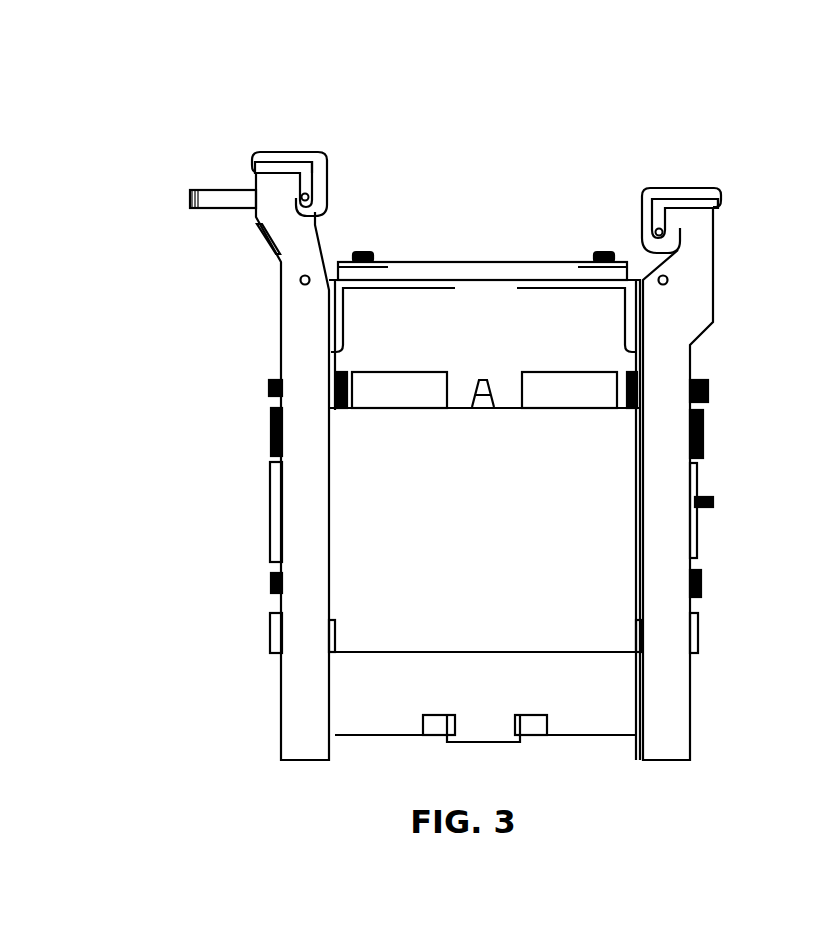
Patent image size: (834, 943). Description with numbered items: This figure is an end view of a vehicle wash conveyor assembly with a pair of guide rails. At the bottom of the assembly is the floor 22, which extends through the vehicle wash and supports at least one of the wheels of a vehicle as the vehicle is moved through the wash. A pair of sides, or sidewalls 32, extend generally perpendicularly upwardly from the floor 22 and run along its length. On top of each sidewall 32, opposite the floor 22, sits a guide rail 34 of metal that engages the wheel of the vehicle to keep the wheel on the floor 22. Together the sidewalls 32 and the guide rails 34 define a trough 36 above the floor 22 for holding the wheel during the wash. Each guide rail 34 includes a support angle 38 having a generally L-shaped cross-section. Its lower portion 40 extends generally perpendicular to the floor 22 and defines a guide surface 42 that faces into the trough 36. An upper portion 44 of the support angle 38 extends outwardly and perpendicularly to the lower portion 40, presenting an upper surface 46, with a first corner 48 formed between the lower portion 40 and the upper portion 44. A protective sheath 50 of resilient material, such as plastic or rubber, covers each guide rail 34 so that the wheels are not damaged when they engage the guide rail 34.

The floor 22 is at (452, 270).
The sidewall 32 is at (256, 186).
The guide rail 34 is at (292, 162).
The trough 36 is at (335, 240).
The support angle 38 is at (700, 205).
The lower portion 40 is at (304, 193).
The guide surface 42 is at (652, 222).
The upper portion 44 is at (253, 165).
The upper surface 46 is at (679, 205).
The first corner 48 is at (308, 163).
The protective sheath 50 is at (277, 150).